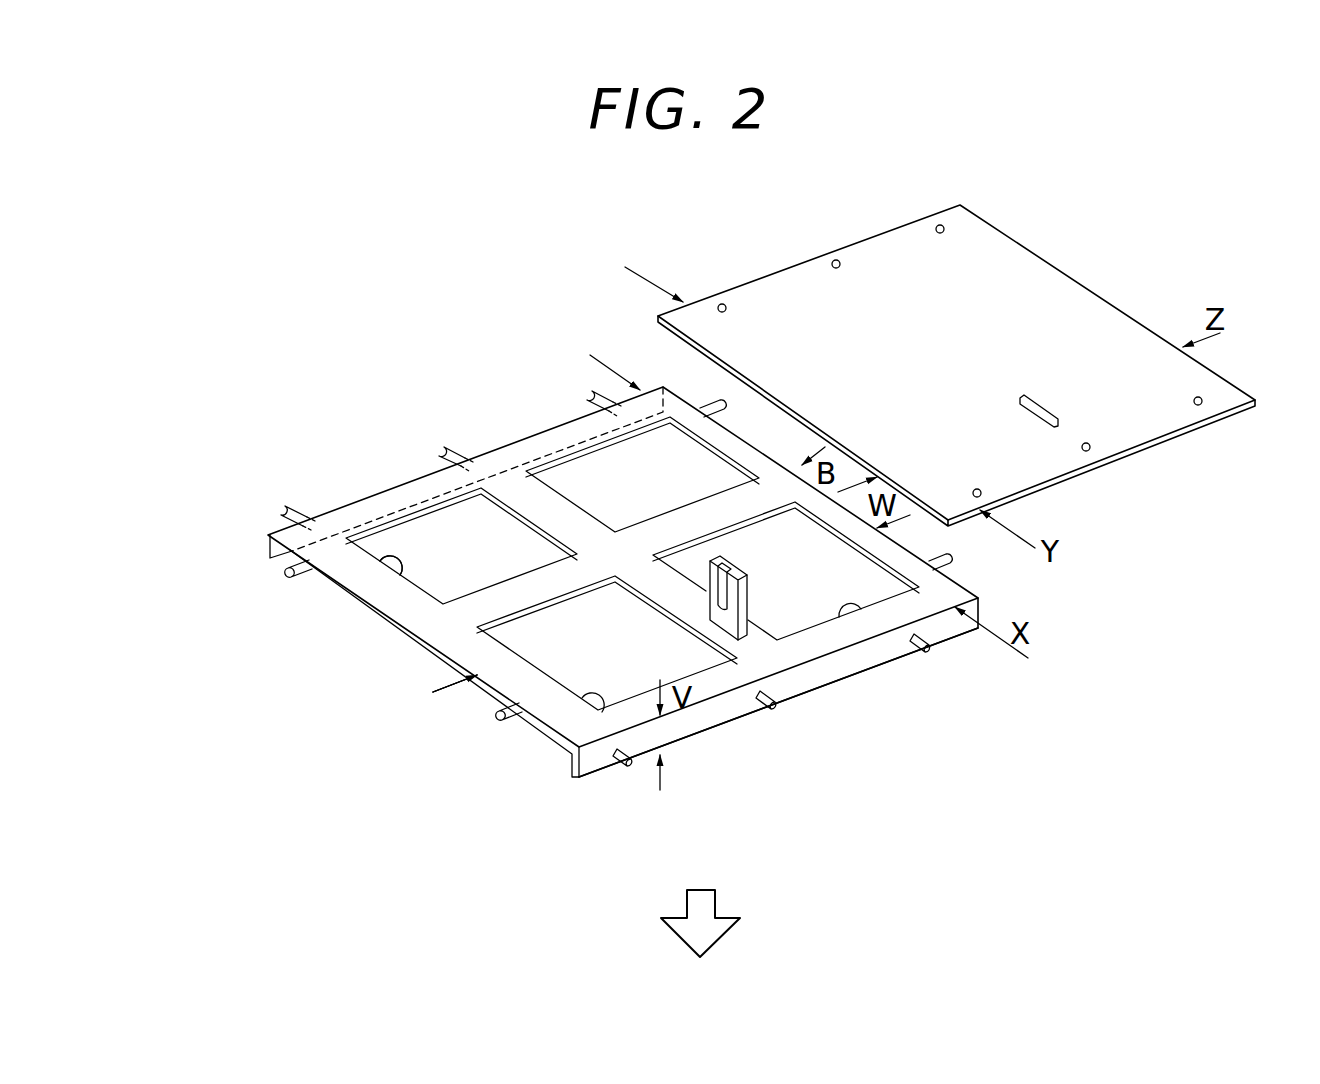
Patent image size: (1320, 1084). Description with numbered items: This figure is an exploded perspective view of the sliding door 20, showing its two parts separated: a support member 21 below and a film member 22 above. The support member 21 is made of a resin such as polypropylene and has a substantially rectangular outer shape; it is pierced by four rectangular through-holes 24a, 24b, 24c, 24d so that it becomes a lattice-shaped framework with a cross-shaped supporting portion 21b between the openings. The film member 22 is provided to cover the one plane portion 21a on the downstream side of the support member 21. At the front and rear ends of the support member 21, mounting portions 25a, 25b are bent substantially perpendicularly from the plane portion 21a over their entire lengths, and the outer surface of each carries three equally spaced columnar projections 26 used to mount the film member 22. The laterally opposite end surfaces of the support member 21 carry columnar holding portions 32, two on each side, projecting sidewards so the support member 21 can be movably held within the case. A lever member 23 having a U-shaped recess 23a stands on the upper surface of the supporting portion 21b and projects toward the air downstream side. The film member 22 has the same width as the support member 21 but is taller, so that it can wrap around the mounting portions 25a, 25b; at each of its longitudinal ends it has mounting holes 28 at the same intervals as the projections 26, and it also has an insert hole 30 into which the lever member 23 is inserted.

The display device assembly 20 is at (488, 690).
The support member 21 is at (624, 569).
The one plane portion 21a is at (460, 632).
The cross-shaped supporting portion 21b is at (430, 592).
The film member 22 is at (1003, 297).
The lever member 23 is at (768, 668).
The U-shaped recess 23a is at (724, 561).
The rectangular through-hole 24a is at (500, 592).
The rectangular through-hole 24b is at (570, 702).
The rectangular through-hole 24c is at (850, 620).
The rectangular through-hole 24d is at (563, 490).
The mounting portion 25a is at (684, 735).
The mounting portion 25b is at (265, 542).
The columnar projection 26 is at (592, 400).
The mounting hole 28 is at (722, 304).
The insert hole 30 is at (1053, 414).
The columnar holding portion 32 is at (720, 403).